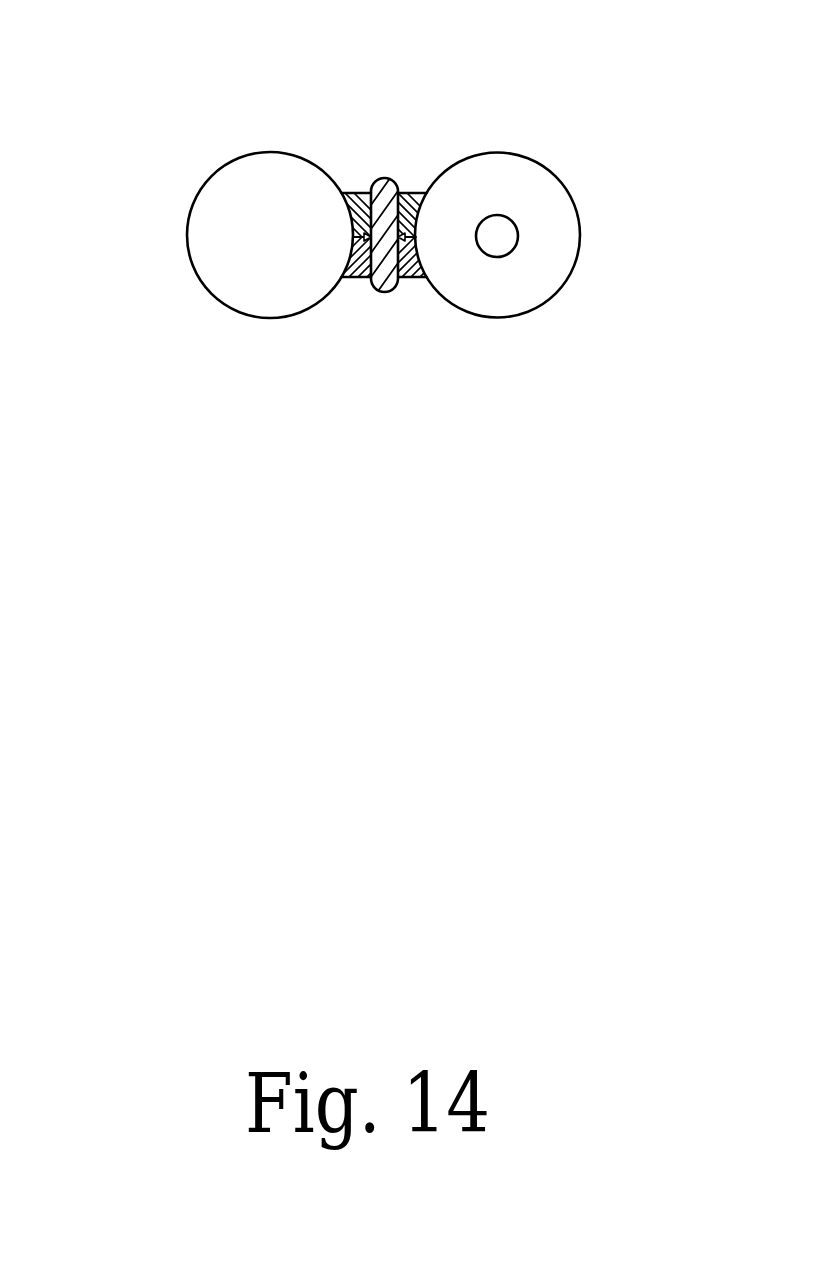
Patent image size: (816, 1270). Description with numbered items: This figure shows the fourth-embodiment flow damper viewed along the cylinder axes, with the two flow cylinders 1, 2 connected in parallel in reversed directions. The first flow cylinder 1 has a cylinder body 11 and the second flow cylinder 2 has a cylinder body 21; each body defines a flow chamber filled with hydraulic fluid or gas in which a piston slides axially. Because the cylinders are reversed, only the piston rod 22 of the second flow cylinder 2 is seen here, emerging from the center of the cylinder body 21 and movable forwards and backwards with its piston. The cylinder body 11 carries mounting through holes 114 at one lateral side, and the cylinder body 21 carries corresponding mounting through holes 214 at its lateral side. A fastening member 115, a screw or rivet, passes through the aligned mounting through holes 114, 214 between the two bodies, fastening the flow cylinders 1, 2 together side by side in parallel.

The first flow cylinder 1 is at (189, 155).
The cylinder body 11 is at (190, 212).
The mounting through holes 114 is at (352, 193).
The fastening members 115 is at (388, 178).
The second flow cylinder 2 is at (594, 180).
The cylinder body 21 is at (557, 293).
The piston rod 22 is at (518, 238).
The mounting through holes 214 is at (360, 273).